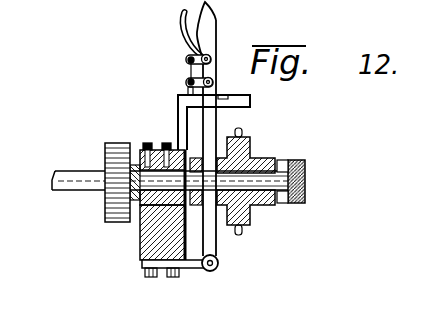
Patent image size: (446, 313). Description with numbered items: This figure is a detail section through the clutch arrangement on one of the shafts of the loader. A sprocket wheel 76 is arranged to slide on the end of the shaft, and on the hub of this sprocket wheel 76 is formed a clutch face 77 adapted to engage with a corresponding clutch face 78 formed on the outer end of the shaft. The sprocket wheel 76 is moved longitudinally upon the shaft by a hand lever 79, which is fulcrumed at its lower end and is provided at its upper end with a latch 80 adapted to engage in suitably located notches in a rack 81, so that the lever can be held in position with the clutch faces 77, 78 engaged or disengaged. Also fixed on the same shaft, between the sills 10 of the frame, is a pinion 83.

The sills 10 is at (150, 223).
The sprocket wheel 76 is at (253, 231).
The clutch face 77 is at (272, 207).
The clutch face 78 is at (281, 160).
The hand lever 79 is at (153, 245).
The latch 80 is at (182, 43).
The rack 81 is at (177, 113).
The pinion 83 is at (138, 163).